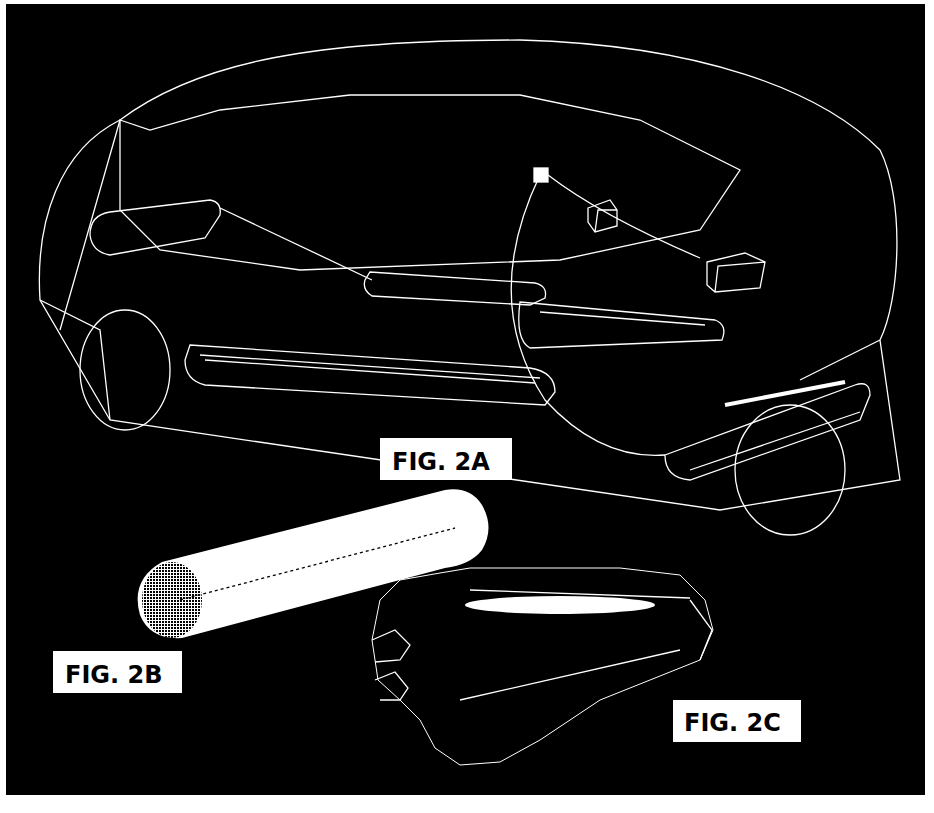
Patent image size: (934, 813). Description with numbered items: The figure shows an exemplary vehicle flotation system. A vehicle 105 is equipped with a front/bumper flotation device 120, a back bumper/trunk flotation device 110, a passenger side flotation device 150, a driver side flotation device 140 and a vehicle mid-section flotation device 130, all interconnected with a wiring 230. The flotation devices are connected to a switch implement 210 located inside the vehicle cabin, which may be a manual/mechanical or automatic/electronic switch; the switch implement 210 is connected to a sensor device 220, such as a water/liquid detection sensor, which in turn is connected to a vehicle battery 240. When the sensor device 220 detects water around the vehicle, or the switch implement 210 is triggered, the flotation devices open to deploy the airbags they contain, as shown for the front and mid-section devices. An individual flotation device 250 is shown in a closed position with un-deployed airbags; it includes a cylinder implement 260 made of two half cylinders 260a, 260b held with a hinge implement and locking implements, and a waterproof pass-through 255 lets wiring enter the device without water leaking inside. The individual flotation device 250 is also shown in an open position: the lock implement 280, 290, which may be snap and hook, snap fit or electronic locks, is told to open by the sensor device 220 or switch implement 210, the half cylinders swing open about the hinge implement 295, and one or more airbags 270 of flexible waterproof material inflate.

In FIG. 2A, the vehicle 105 is at (118, 108).
In FIG. 2A, the back bumper/trunk flotation device 110 is at (230, 398).
In FIG. 2A, the front/bumper flotation device 120 is at (700, 475).
In FIG. 2A, the vehicle mid-section flotation device 130 is at (640, 366).
In FIG. 2A, the driver side flotation device 140 is at (468, 292).
In FIG. 2A, the passenger side flotation device 150 is at (325, 377).
In FIG. 2A, the switch implement 210 is at (542, 168).
In FIG. 2A, the sensor device 220 is at (640, 205).
In FIG. 2A, the wiring 230 is at (617, 206).
In FIG. 2A, the vehicle battery 240 is at (762, 256).
In FIG. 2B, the individual flotation device 250 is at (138, 600).
In FIG. 2B, the waterproof pass-through 255 is at (143, 583).
In FIG. 2B, the cylinder implement 260 is at (340, 538).
In FIG. 2C, the half cylinder 260a is at (372, 640).
In FIG. 2C, the half cylinder 260b is at (378, 686).
In FIG. 2C, the airbag 270 is at (430, 733).
In FIG. 2A, the lock implement 280 is at (848, 428).
In FIG. 2C, the lock implement 280 is at (455, 706).
In FIG. 2A, the lock implement 290 is at (800, 368).
In FIG. 2C, the lock implement 290 is at (676, 599).
In FIG. 2C, the hinge implement 295 is at (684, 624).